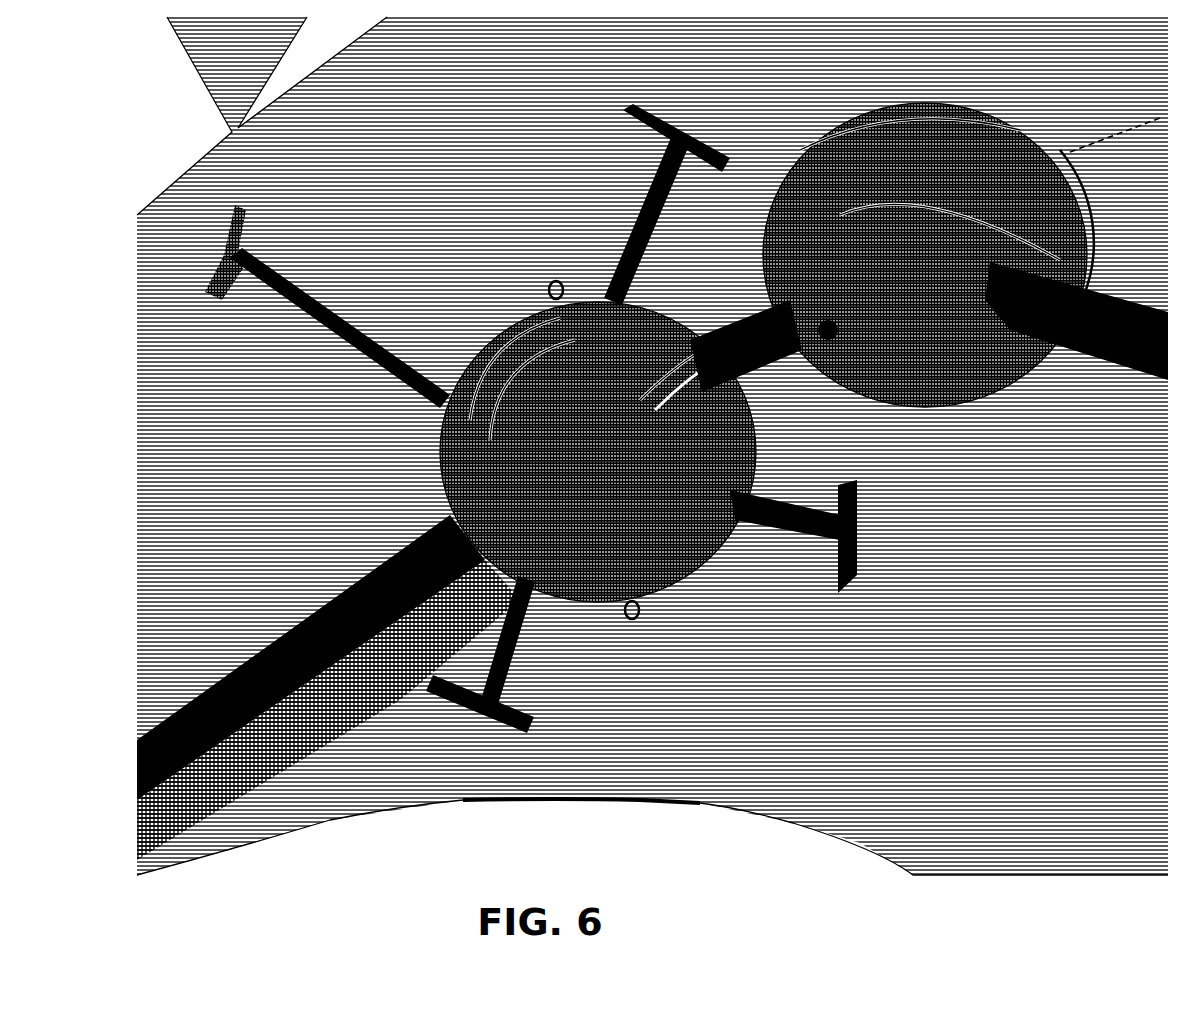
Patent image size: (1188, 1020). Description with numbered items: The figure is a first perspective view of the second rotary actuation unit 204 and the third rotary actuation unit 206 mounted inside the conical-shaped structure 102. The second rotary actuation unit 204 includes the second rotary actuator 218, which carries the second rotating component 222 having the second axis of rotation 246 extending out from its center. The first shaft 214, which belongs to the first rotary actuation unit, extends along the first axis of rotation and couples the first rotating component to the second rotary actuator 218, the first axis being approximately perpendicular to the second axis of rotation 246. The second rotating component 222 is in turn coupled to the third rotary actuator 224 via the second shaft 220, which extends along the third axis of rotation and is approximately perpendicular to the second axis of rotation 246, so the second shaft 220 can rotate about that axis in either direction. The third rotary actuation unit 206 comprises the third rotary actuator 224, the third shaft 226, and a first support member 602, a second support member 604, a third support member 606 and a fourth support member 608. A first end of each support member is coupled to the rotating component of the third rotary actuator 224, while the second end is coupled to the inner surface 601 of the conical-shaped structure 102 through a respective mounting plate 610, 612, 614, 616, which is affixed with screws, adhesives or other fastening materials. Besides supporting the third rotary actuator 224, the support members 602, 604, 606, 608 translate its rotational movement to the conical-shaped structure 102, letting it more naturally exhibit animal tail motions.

The conical-shaped structure 102 is at (665, 800).
The second rotary actuation unit 204 is at (755, 110).
The third rotary actuation unit 206 is at (258, 408).
The first shaft 214 is at (1092, 380).
The second rotary actuator 218 is at (1075, 192).
The second shaft 220 is at (707, 332).
The second rotating component 222 is at (826, 132).
The third rotary actuator 224 is at (698, 465).
The third shaft 226 is at (242, 680).
The second axis of rotation 246 is at (1100, 146).
The inner surface 601 is at (925, 580).
The first support member 602 is at (345, 318).
The second support member 604 is at (640, 200).
The third support member 606 is at (785, 532).
The fourth support member 608 is at (515, 648).
The mounting plate 610 is at (238, 222).
The mounting plate 612 is at (645, 105).
The mounting plate 614 is at (860, 497).
The mounting plate 616 is at (482, 745).